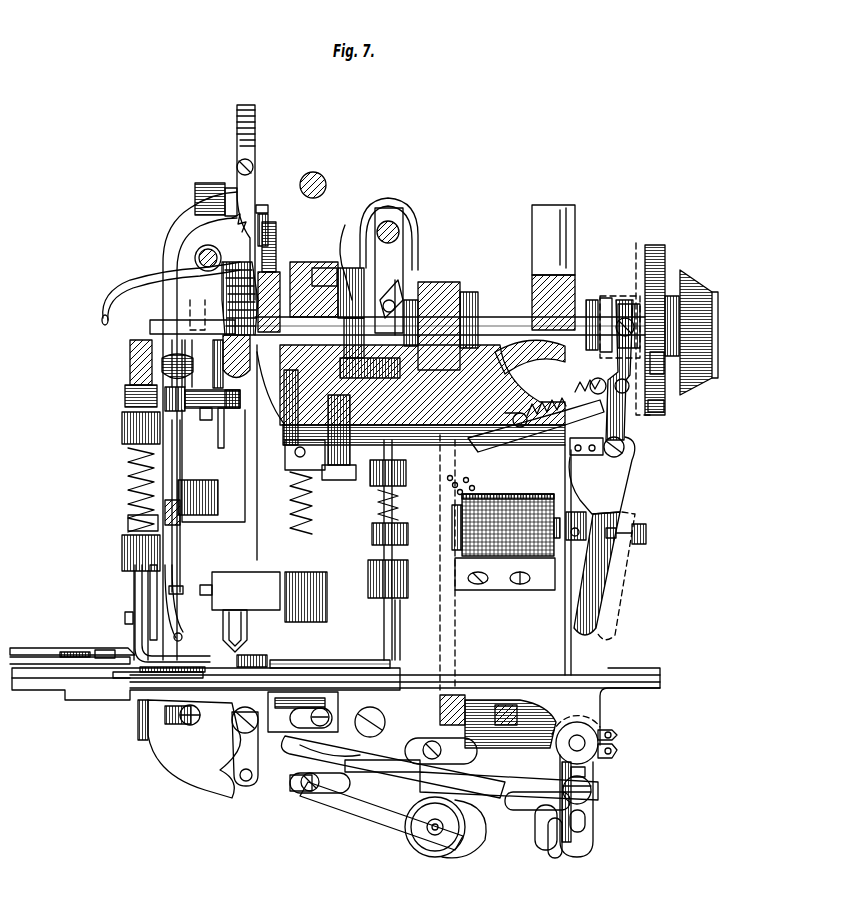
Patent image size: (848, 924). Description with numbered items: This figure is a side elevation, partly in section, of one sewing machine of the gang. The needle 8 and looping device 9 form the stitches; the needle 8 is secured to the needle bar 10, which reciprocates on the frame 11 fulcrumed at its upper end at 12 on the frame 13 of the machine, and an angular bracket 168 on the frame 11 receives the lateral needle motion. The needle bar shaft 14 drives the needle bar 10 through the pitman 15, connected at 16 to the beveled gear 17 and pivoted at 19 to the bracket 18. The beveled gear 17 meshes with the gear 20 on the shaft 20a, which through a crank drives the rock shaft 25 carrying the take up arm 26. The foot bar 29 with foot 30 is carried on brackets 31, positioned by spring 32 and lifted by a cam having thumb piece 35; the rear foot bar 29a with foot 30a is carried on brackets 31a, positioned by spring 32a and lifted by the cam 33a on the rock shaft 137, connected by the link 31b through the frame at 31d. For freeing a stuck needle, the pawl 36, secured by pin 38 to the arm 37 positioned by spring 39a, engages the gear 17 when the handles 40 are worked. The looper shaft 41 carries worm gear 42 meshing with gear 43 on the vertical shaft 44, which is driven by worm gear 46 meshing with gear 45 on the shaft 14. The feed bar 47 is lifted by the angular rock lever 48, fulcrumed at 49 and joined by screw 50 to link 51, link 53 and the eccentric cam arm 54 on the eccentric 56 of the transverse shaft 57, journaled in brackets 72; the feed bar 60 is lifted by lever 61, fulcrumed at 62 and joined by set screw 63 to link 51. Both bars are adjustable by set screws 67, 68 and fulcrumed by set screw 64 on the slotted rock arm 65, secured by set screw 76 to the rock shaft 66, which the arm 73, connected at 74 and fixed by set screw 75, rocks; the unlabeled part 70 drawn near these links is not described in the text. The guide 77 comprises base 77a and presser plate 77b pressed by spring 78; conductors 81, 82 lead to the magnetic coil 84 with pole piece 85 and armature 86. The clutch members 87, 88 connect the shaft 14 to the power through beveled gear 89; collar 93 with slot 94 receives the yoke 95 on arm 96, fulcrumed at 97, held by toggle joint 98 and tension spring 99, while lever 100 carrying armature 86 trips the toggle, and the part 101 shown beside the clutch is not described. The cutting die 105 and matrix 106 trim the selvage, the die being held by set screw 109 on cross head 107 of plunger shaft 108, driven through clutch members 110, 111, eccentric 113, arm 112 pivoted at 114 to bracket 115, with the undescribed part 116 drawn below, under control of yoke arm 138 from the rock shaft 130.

The needle 8 is at (182, 628).
The looping device 9 is at (136, 720).
The needle bar 10 is at (169, 590).
The frame 11 is at (88, 510).
The fulcrum 12 is at (214, 184).
The frame of the sewing machine 13 is at (231, 198).
The needle bar shaft 14 is at (305, 278).
The pitman 15 is at (232, 328).
The pitman connection 16 is at (238, 272).
The beveled gear 17 is at (240, 400).
The bracket 18 is at (180, 408).
The pitman pivot 19 is at (215, 422).
The gear 20 is at (145, 352).
The shaft 20a is at (190, 322).
The rock shaft 25 is at (197, 255).
The take up arm 26 is at (112, 268).
The foot bar 29 is at (150, 598).
The rear foot bar 29a is at (400, 608).
The foot 30 is at (176, 668).
The foot 30a is at (314, 660).
The brackets 31 is at (122, 426).
The brackets 31a is at (398, 492).
The link 31b is at (366, 207).
The frame location 31d is at (372, 544).
The spring 32 is at (128, 468).
The spring 32a is at (400, 524).
The cam 33a is at (345, 225).
The thumb piece 35 is at (160, 600).
The pawl 36 is at (266, 272).
The arm 37 is at (262, 208).
The pin 38 is at (234, 216).
The spring 39a is at (270, 222).
The handles 40 is at (257, 118).
The shaft 41 is at (306, 728).
The worm gear 42 is at (448, 696).
The gear 43 is at (480, 722).
The vertical shaft 44 is at (446, 636).
The gear 45 is at (448, 288).
The worm gear 46 is at (476, 298).
The feed bar 47 is at (158, 742).
The angular rock lever 48 is at (240, 750).
The fulcrum 49 is at (207, 750).
The screw 50 is at (238, 782).
The link 51 is at (262, 778).
The link 53 is at (306, 790).
The eccentric cam arm 54 is at (424, 842).
The eccentric 56 is at (432, 860).
The transverse shaft 57 is at (438, 838).
The feed bar 60 is at (280, 696).
The angular rock lever 61 is at (345, 712).
The fulcrum 62 is at (380, 712).
The set screw 63 is at (380, 800).
The set screw 64 is at (592, 792).
The slotted rock arm 65 is at (595, 826).
The rock shaft 66 is at (582, 740).
The set screw 67 is at (312, 800).
The set screw 68 is at (438, 746).
The link 70 is at (520, 812).
The brackets 72 is at (458, 822).
The arm 73 is at (552, 850).
The connection 74 is at (542, 845).
The set screw 75 is at (618, 752).
The set screw 76 is at (616, 738).
The guide and tension device 77 is at (52, 650).
The base 77a is at (62, 672).
The presser plate 77b is at (86, 652).
The spring 78 is at (100, 651).
The conductor 81 is at (455, 482).
The conductor 82 is at (468, 480).
The magnetic coil 84 is at (510, 500).
The pole piece 85 is at (550, 572).
The armature 86 is at (598, 512).
The clutch member 87 is at (672, 300).
The clutch member 88 is at (658, 260).
The beveled gear 89 is at (702, 282).
The collar 93 is at (604, 300).
The slot 94 is at (622, 300).
The yoke 95 is at (770, 363).
The arm 96 is at (596, 578).
The fulcrum 97 is at (627, 447).
The toggle joint 98 is at (530, 380).
The tension spring 99 is at (548, 436).
The lever 100 is at (612, 466).
The stop 101 is at (668, 405).
The cutting die 105 is at (230, 642).
The matrix 106 is at (250, 655).
The cross head 107 is at (289, 597).
The plunger shaft 108 is at (300, 412).
The set screw 109 is at (240, 591).
The clutch member 110 is at (346, 268).
The clutch member 111 is at (398, 292).
The arm 112 is at (340, 376).
The eccentric 113 is at (292, 330).
The pivot 114 is at (362, 480).
The bracket 115 is at (312, 452).
The spring 116 is at (300, 498).
The rock shaft 130 is at (318, 175).
The rock shaft 137 is at (396, 233).
The yoke arm 138 is at (398, 280).
The angular bracket 168 is at (180, 503).